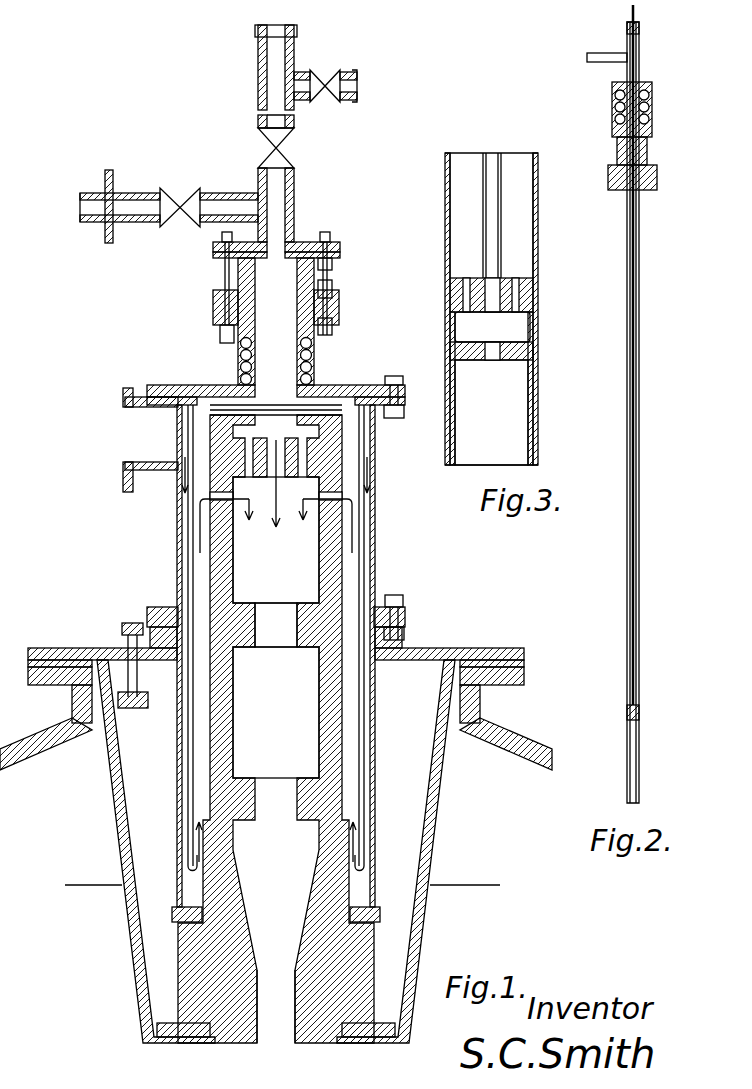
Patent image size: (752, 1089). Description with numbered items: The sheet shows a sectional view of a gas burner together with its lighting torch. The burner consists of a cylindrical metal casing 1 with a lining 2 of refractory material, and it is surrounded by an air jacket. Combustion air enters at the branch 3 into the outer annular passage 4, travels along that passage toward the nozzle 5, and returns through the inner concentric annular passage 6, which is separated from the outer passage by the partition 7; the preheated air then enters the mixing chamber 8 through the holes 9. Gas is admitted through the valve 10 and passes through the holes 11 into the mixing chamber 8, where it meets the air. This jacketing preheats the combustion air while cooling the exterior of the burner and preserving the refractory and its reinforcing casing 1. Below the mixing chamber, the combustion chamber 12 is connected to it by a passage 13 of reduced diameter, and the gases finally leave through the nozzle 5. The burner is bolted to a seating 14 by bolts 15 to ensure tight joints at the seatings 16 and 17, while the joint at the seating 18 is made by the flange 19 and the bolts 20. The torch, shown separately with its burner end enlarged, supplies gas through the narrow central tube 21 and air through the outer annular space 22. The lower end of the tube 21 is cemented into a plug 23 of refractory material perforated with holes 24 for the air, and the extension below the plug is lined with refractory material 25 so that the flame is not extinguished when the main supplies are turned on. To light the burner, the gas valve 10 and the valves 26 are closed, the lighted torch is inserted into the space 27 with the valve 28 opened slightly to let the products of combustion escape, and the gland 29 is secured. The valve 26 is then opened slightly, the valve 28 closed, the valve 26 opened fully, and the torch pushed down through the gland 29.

In FIG. 1, the cylindrical metal casing 1 is at (345, 531).
In FIG. 1, the lining 2 is at (330, 553).
In FIG. 1, the branch 3 is at (140, 440).
In FIG. 1, the outer annular passage 4 is at (188, 518).
In FIG. 1, the nozzle 5 is at (273, 1007).
In FIG. 1, the inner concentric annular passage 6 is at (200, 575).
In FIG. 1, the partition 7 is at (190, 596).
In FIG. 1, the mixing chamber 8 is at (276, 540).
In FIG. 1, the holes 9 is at (332, 497).
In FIG. 1, the valve 10 is at (174, 195).
In FIG. 1, the holes 11 is at (305, 458).
In FIG. 1, the combustion chamber 12 is at (290, 710).
In FIG. 1, the passage 13 is at (275, 625).
In FIG. 1, the seating 14 is at (118, 797).
In FIG. 1, the bolts 15 is at (121, 633).
In FIG. 1, the seating 16 is at (382, 915).
In FIG. 1, the seating 17 is at (410, 1030).
In FIG. 1, the seating 18 is at (342, 430).
In FIG. 1, the flange 19 is at (330, 415).
In FIG. 1, the bolts 20 is at (236, 283).
In FIG. 2, the central tube 21 is at (636, 14).
In FIG. 3, the central tube 21 is at (492, 198).
In FIG. 2, the outer annular space 22 is at (631, 65).
In FIG. 3, the outer annular space 22 is at (463, 255).
In FIG. 2, the plug 23 is at (638, 700).
In FIG. 3, the plug 23 is at (455, 294).
In FIG. 3, the holes 24 is at (468, 303).
In FIG. 3, the refractory material 25 is at (538, 438).
In FIG. 1, the valve 26 is at (294, 163).
In FIG. 1, the space 27 is at (277, 123).
In FIG. 1, the valve 28 is at (328, 77).
In FIG. 2, the gland 29 is at (650, 176).